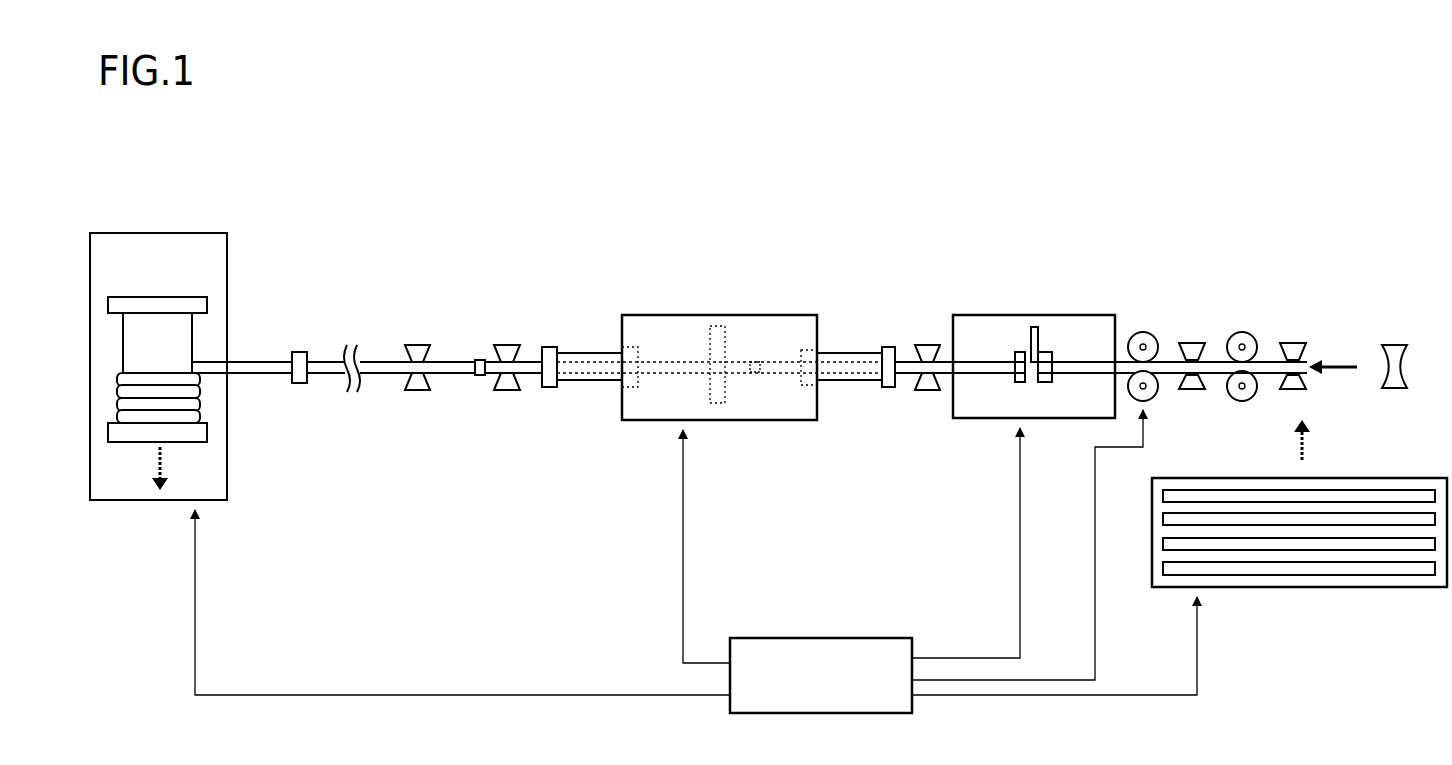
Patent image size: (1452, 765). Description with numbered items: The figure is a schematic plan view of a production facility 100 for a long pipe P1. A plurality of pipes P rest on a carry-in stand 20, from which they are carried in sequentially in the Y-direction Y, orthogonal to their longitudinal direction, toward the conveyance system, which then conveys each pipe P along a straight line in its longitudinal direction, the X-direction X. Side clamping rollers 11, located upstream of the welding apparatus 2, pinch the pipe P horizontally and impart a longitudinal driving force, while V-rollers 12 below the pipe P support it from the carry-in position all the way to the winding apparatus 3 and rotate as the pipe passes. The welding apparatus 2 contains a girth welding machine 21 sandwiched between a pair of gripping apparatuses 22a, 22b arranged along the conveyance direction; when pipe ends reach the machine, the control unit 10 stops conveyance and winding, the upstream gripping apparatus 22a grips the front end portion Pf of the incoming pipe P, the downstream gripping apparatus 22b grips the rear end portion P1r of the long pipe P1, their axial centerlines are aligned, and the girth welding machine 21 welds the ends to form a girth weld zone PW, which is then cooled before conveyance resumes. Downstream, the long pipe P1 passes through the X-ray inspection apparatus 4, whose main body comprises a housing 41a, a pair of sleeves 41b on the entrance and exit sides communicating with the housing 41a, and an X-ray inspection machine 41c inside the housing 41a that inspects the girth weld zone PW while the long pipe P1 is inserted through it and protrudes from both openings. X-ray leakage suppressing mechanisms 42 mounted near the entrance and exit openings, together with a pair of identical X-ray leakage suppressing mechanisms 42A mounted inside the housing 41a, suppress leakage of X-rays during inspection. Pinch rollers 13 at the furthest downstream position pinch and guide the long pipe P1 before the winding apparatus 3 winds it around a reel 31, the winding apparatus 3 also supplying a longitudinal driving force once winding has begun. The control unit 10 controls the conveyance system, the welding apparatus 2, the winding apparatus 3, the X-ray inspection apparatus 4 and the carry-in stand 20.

The production facility 100 is at (1148, 213).
The welding apparatus 2 is at (1034, 386).
The winding apparatus 3 is at (711, 390).
The X-ray inspection apparatus 4 is at (689, 372).
The control unit 10 is at (696, 561).
The side clamping rollers 11 is at (1238, 333).
The V-rollers 12 is at (410, 345).
The pinch rollers 13 is at (305, 385).
The carry-in stand 20 is at (1298, 590).
The girth welding machine 21 is at (1033, 328).
The gripping apparatus 22a is at (1052, 383).
The gripping apparatus 22b is at (1020, 350).
The reel 31 is at (163, 305).
The housing 41a is at (798, 422).
The sleeves 41b is at (570, 382).
The X-ray inspection machine 41c is at (718, 330).
The X-ray leakage suppressing mechanisms 42 is at (548, 350).
The X-ray leakage suppressing mechanisms 42A is at (625, 340).
The pipe P is at (1218, 375).
The long pipe P1 is at (253, 370).
The rear end portion P1r is at (1018, 385).
The front end portion Pf is at (1047, 385).
The girth weld zone PW is at (757, 367).
The X-direction X is at (1333, 354).
The Y-direction Y is at (742, 455).